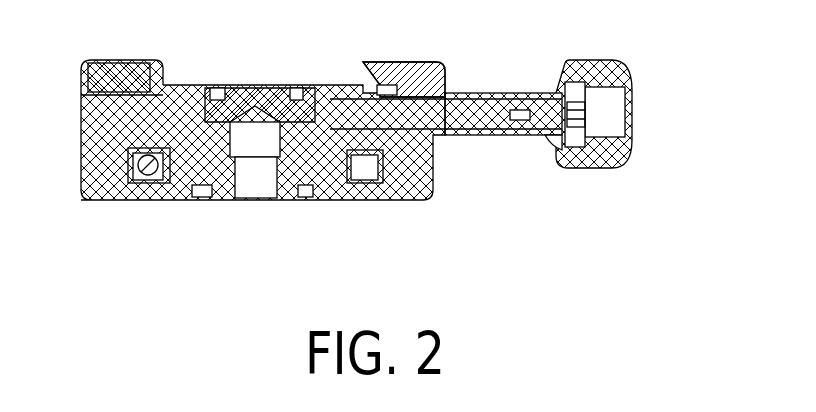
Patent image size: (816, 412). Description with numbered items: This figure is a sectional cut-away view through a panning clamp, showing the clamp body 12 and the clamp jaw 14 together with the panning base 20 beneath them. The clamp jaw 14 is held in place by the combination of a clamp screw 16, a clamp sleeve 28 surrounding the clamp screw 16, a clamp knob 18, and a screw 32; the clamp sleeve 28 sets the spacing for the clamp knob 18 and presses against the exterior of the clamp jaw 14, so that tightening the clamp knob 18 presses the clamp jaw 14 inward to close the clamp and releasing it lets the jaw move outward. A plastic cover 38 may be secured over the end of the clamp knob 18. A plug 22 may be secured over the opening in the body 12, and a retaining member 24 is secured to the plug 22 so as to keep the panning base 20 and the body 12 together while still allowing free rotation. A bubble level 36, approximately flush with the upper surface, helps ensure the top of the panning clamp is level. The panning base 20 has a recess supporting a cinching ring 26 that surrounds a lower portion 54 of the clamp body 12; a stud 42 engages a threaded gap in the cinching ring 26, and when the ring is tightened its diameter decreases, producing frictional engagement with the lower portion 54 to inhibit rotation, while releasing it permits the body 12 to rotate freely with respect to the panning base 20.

The clamp body 12 is at (178, 85).
The clamp jaw 14 is at (405, 62).
The clamp screw 16 is at (477, 93).
The clamp knob 18 is at (585, 62).
The panning base 20 is at (93, 197).
The plug 22 is at (272, 86).
The retaining member 24 is at (265, 188).
The cinching ring 26 is at (133, 197).
The clamp sleeve 28 is at (528, 93).
The screw 32 is at (550, 140).
The bubble level 36 is at (145, 62).
The plastic cover 38 is at (636, 113).
The stud 42 is at (158, 198).
The lower portion 54 is at (178, 198).